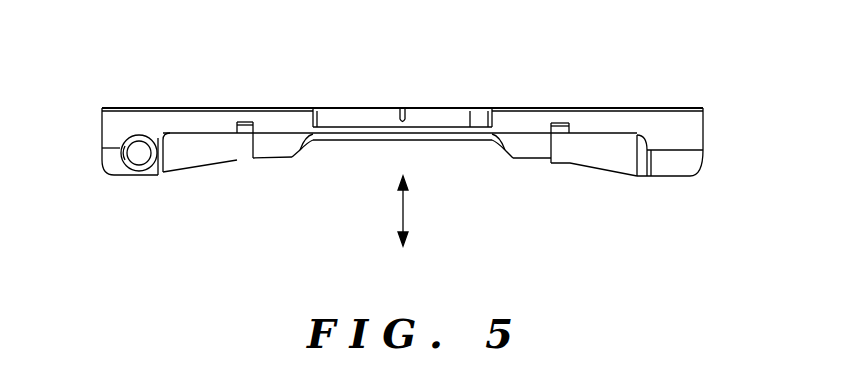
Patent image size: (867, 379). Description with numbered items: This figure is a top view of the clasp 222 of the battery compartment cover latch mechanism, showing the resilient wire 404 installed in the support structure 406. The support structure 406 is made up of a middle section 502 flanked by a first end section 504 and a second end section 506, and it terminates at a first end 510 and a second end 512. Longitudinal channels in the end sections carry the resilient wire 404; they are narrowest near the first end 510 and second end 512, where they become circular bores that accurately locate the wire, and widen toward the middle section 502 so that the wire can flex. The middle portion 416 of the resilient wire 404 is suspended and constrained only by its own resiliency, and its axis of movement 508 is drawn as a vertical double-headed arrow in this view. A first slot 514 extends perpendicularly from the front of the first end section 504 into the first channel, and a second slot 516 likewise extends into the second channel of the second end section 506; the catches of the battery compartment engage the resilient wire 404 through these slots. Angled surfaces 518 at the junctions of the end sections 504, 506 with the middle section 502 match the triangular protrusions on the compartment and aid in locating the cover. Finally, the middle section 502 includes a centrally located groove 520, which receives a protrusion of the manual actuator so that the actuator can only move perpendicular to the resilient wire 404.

The clasp 222 is at (570, 42).
The support structure 406 is at (676, 120).
The first end section 504 is at (132, 118).
The first end 510 is at (102, 138).
The second end 512 is at (705, 142).
The middle section 502 is at (335, 110).
The groove 520 is at (401, 110).
The middle portion 416 is at (478, 113).
The resilient wire 404 is at (365, 130).
The first slot 514 is at (244, 152).
The angled surfaces 518 is at (305, 150).
The second slot 516 is at (561, 157).
The second end section 506 is at (601, 157).
The axis of movement 508 is at (405, 216).